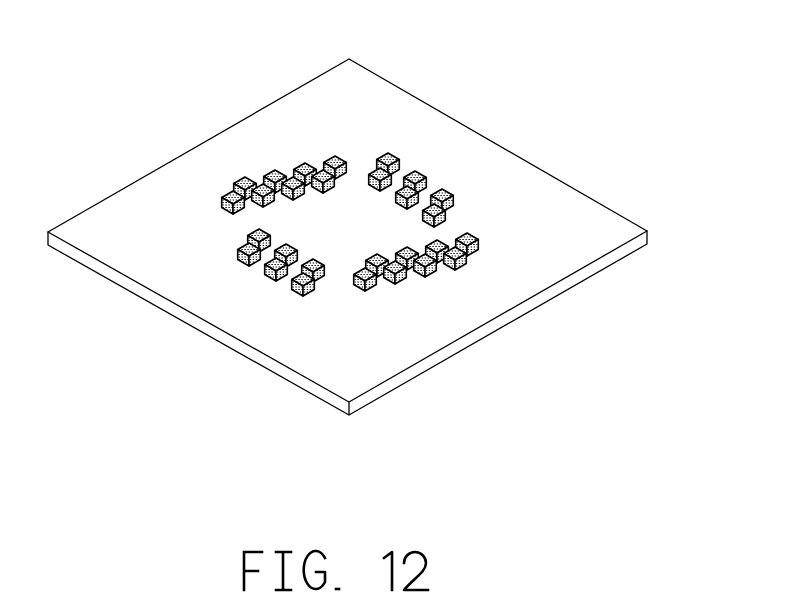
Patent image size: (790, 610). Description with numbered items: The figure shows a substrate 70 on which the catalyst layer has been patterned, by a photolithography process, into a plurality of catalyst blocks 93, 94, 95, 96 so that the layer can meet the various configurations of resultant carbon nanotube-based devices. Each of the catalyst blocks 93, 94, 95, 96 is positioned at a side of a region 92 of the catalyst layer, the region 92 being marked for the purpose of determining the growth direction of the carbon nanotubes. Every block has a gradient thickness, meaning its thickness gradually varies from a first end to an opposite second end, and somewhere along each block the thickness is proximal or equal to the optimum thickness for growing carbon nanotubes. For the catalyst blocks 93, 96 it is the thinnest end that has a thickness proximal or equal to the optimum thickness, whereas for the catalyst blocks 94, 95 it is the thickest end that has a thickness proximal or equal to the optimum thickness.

The substrate 70 is at (557, 208).
The region 92 is at (312, 170).
The catalyst block 93 is at (473, 249).
The catalyst block 94 is at (368, 279).
The catalyst block 95 is at (332, 170).
The catalyst block 96 is at (233, 190).